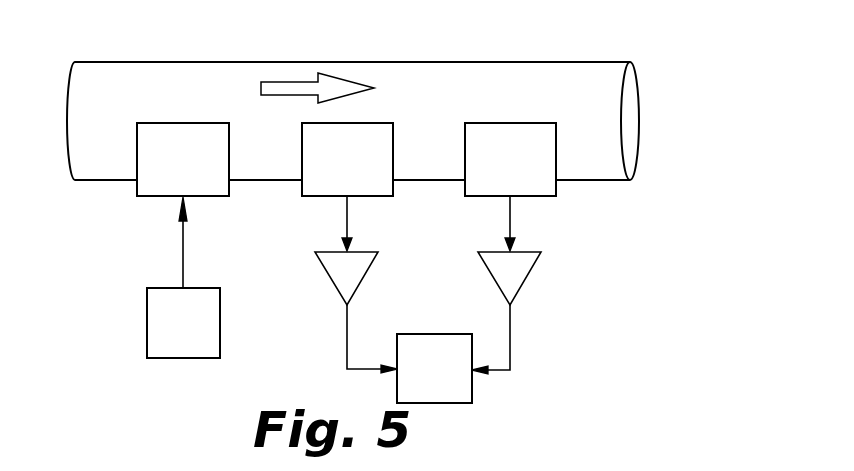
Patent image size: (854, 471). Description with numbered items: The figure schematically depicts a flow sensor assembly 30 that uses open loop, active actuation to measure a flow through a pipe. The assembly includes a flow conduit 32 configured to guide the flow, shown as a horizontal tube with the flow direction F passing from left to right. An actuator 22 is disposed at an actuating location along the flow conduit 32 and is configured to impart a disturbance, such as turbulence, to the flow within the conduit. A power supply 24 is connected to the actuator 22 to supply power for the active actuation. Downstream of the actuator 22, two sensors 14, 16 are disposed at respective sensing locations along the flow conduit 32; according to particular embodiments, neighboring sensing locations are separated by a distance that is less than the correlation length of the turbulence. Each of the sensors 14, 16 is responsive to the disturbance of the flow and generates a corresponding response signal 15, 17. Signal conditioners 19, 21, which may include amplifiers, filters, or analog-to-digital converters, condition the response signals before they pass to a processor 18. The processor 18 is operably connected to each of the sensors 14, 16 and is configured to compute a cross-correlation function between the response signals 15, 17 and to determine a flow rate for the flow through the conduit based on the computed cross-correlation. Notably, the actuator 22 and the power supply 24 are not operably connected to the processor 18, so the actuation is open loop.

The flow sensor assembly 30 is at (72, 43).
The flow conduit 32 is at (615, 60).
The actuator 22 is at (208, 196).
The sensor 14 is at (370, 196).
The sensor 16 is at (535, 195).
The power supply 24 is at (172, 333).
The signal conditioner 19 is at (362, 280).
The signal conditioner 21 is at (525, 280).
The response signal 15 is at (346, 356).
The response signal 17 is at (510, 337).
The processor 18 is at (421, 379).